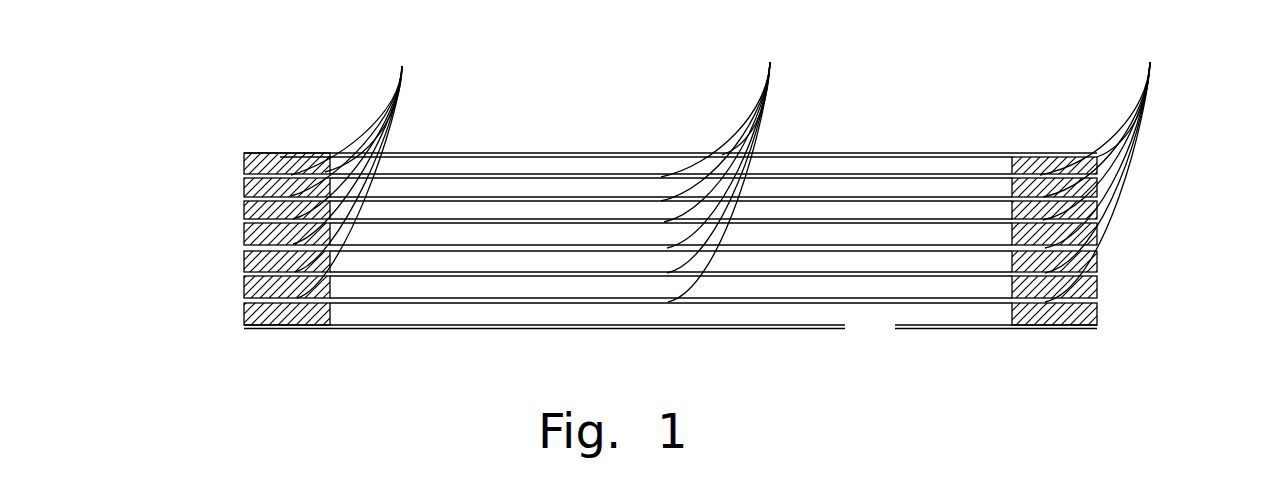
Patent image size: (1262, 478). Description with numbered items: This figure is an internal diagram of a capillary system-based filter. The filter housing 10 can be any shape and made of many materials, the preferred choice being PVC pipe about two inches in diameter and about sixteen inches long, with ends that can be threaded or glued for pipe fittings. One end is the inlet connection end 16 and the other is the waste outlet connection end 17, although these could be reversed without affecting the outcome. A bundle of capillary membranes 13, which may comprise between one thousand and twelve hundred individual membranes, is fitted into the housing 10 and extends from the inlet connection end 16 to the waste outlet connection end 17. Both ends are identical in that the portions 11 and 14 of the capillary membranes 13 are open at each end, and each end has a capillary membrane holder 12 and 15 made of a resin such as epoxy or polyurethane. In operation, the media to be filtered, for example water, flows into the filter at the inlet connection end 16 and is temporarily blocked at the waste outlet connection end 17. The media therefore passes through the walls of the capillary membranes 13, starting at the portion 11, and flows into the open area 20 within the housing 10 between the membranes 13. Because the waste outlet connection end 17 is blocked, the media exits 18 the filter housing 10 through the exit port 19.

The filter housing 10 is at (512, 153).
The open portion of capillary membranes at inlet end 11 is at (354, 161).
The capillary membrane holder 12 is at (280, 168).
The capillary membranes 13 is at (723, 163).
The open portion of capillary membranes at outlet end 14 is at (1104, 163).
The capillary membrane holder 15 is at (1041, 165).
The inlet connection end 16 is at (220, 244).
The waste outlet connection end 17 is at (1123, 237).
The exit of media 18 is at (870, 326).
The exit port 19 is at (860, 322).
The open area within housing 20 is at (486, 232).